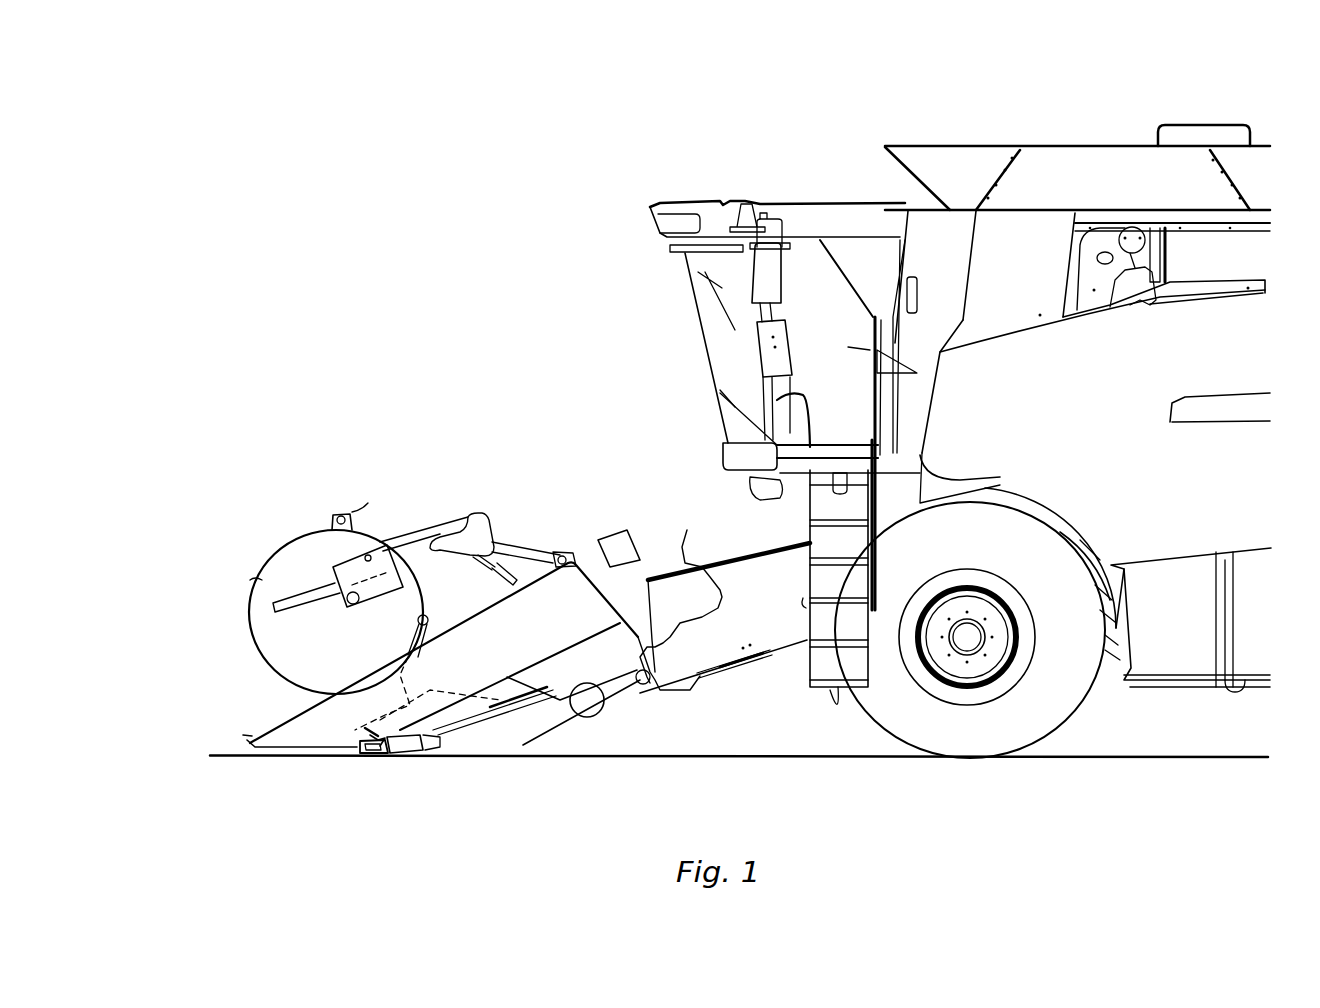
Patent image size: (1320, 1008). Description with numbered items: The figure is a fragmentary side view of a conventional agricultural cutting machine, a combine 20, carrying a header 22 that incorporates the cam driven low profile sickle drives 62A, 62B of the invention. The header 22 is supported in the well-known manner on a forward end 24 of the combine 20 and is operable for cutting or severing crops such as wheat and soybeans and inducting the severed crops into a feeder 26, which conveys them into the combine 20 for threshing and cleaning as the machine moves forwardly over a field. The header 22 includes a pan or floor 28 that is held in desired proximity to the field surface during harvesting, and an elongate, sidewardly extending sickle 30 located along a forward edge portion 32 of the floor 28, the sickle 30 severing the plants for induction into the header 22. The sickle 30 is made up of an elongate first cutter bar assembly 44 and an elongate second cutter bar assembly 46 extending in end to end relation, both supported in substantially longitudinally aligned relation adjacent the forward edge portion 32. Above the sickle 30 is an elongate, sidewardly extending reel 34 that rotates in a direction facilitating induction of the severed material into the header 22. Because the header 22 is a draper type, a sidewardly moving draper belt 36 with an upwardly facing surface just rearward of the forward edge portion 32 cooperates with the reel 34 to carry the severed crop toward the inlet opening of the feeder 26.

The combine 20 is at (1104, 120).
The header 22 is at (512, 543).
The forward end 24 is at (608, 533).
The feeder 26 is at (687, 530).
The floor 28 is at (499, 749).
The draper belt 36 is at (450, 724).
The sickle 30 is at (397, 800).
The first cutter bar assembly 44 is at (397, 800).
The second cutter bar assembly 46 is at (362, 757).
The forward edge portion 32 is at (402, 733).
The reel 34 is at (342, 512).
The cam driven low profile sickle drive 62A is at (250, 718).
The cam driven low profile sickle drive 62B is at (372, 735).